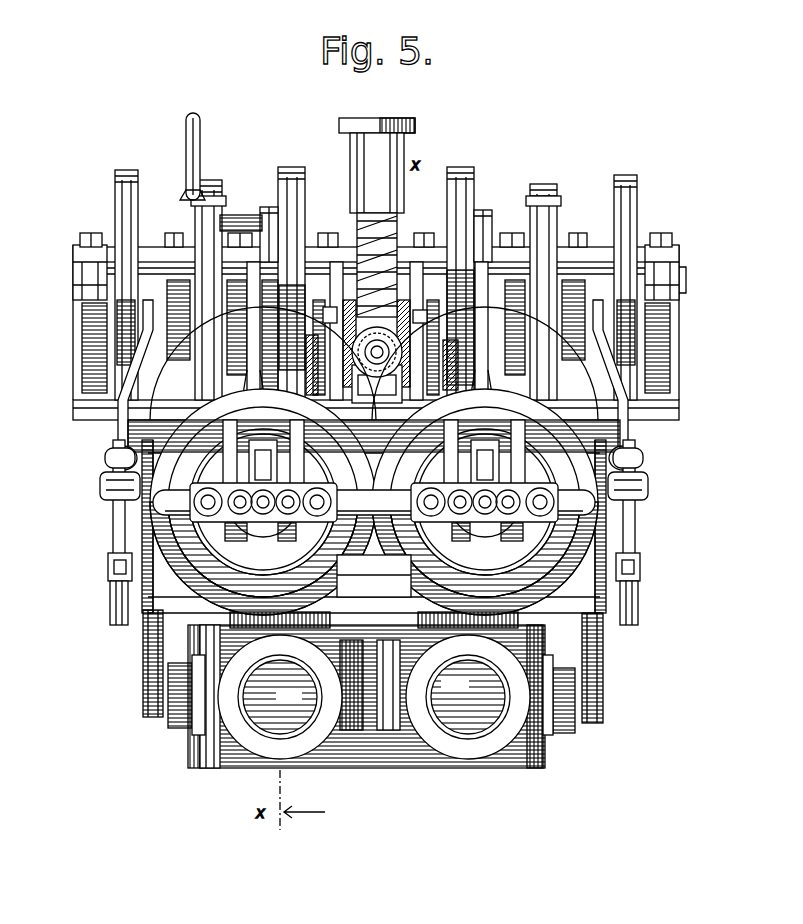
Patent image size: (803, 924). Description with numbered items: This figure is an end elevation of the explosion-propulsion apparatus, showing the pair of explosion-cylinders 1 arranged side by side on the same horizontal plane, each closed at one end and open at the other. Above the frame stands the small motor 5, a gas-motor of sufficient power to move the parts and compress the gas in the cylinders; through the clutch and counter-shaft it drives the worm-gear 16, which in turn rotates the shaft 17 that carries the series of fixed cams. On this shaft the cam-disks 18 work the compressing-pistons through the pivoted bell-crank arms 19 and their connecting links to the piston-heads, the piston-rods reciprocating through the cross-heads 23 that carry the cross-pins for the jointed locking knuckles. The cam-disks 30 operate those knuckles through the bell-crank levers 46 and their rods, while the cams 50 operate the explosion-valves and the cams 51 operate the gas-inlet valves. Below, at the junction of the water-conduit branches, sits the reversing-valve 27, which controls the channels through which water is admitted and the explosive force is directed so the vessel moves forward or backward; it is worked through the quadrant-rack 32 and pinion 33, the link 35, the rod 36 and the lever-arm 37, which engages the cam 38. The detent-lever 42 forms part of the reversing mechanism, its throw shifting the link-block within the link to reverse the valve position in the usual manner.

The explosion-cylinder 1 is at (376, 429).
The motor 5 is at (380, 166).
The worm-gear 16 is at (360, 335).
The shaft 17 is at (73, 278).
The cam-disk 18 is at (483, 168).
The bell-crank arm 19 is at (368, 331).
The cross-head 23 is at (263, 522).
The reversing-valve 27 is at (478, 687).
The cam-disk 30 is at (303, 209).
The quadrant-rack 32 is at (163, 612).
The pinion 33 is at (143, 705).
The link 35 is at (372, 616).
The rod 36 is at (113, 521).
The lever-arm 37 is at (152, 355).
The cam 38 is at (138, 195).
The detent-lever 42 is at (198, 146).
The bell-crank lever 46 is at (377, 368).
The cam 50 is at (222, 201).
The cam 51 is at (197, 207).